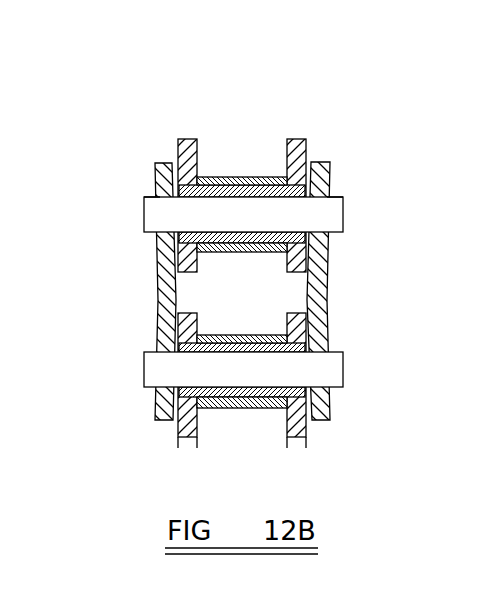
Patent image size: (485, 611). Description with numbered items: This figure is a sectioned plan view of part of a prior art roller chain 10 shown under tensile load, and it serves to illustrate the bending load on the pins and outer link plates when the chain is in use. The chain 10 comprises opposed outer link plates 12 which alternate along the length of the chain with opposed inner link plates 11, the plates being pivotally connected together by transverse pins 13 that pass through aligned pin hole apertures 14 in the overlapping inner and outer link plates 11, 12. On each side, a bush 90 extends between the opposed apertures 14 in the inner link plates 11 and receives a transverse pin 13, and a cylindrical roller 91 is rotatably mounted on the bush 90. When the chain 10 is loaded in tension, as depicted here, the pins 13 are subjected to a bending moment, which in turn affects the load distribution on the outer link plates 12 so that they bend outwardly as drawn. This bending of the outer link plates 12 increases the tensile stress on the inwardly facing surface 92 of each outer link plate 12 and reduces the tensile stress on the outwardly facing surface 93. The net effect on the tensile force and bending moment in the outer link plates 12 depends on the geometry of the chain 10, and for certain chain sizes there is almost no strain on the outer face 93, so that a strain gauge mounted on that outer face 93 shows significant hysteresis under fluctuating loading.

The roller chain 10 is at (350, 288).
The inner link plates 11 is at (184, 139).
The outer link plates 12 is at (157, 164).
The transverse pins 13 is at (143, 223).
The pin hole apertures 14 is at (150, 196).
The bush 90 is at (310, 142).
The cylindrical roller 91 is at (230, 177).
The inwardly facing surface 92 is at (293, 437).
The outwardly facing surface 93 is at (327, 328).